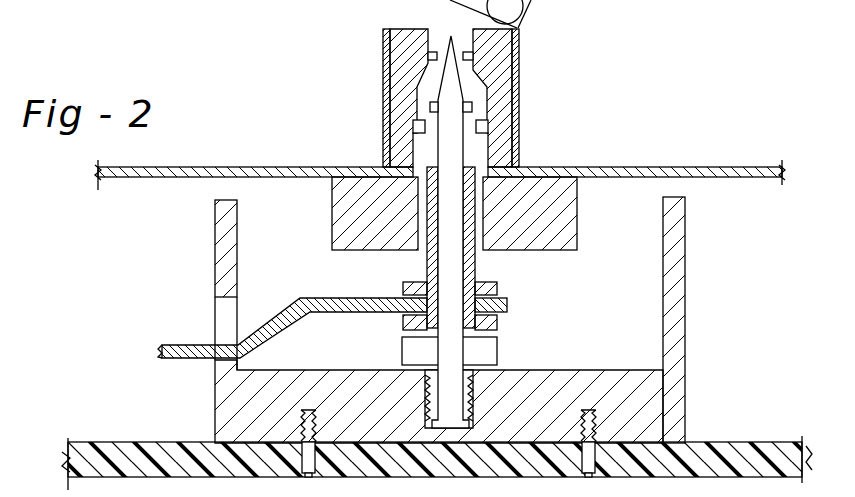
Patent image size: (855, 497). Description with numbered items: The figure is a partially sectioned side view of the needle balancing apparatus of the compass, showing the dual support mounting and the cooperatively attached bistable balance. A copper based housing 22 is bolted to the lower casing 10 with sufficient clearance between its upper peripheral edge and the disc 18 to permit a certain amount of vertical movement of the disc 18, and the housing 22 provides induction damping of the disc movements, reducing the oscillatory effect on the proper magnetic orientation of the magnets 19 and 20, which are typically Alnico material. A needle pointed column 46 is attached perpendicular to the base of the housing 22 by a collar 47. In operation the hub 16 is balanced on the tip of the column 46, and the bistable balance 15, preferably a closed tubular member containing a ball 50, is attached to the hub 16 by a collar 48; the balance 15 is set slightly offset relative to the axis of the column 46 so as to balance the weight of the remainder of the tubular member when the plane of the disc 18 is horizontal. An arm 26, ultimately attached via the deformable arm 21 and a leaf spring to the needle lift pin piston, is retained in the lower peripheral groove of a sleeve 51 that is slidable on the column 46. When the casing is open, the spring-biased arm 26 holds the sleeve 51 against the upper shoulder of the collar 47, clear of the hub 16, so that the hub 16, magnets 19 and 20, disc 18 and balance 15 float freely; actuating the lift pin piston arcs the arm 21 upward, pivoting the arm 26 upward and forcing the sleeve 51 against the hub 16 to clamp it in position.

The lower casing 10 is at (727, 447).
The bistable balance 15 is at (458, 3).
The hub 16 is at (397, 77).
The disc 18 is at (689, 166).
The magnet 19 is at (334, 203).
The magnet 20 is at (563, 217).
The deformable arm 21 is at (216, 268).
The copper based housing 22 is at (677, 286).
The arm 26 is at (193, 345).
The needle pointed column 46 is at (452, 278).
The collar 47 is at (487, 352).
The collar 48 is at (518, 80).
The ball 50 is at (526, 4).
The sleeve 51 is at (433, 258).